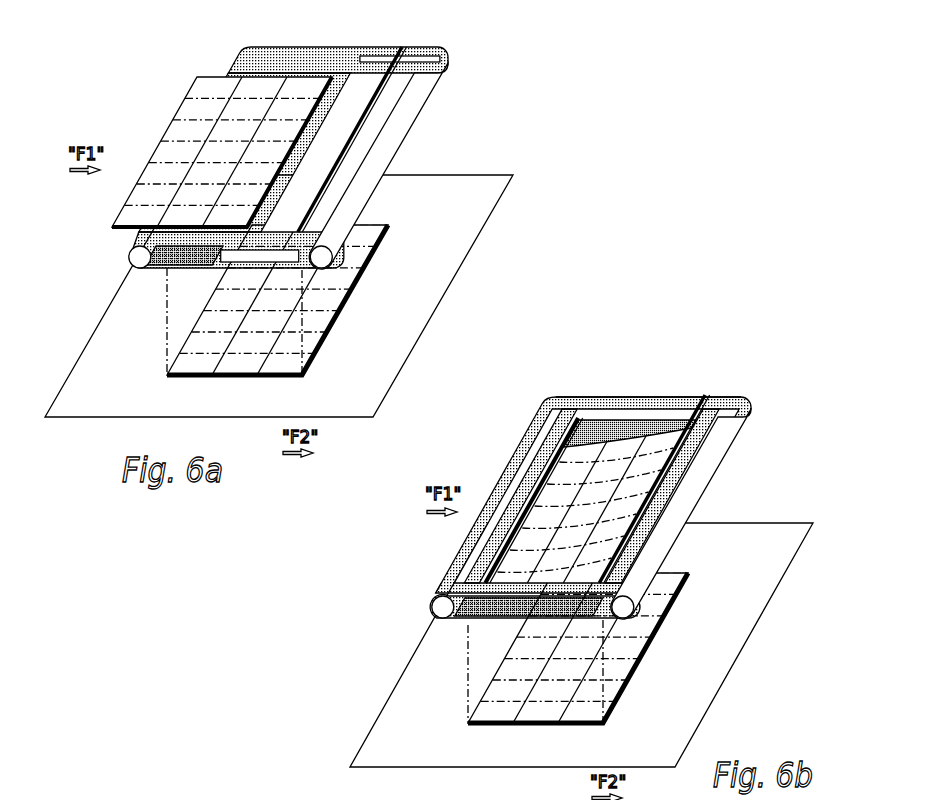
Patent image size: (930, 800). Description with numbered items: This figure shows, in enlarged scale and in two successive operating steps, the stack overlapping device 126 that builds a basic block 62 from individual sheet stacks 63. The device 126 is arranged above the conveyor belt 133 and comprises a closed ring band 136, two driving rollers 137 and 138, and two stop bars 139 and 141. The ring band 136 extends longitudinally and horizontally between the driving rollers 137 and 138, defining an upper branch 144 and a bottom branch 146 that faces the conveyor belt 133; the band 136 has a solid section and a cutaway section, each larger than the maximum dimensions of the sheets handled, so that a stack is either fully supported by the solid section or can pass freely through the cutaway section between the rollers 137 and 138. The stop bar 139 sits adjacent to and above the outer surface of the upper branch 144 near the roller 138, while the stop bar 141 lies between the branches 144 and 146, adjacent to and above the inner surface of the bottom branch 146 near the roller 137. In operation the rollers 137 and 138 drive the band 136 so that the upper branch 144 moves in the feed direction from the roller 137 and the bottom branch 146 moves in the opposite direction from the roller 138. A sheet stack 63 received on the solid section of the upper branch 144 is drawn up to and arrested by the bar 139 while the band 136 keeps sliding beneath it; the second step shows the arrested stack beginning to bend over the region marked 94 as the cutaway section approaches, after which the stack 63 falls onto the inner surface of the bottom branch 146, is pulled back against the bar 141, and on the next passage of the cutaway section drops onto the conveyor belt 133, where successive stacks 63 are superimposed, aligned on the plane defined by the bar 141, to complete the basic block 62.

In FIG. 6A, the basic block 62 is at (328, 345).
In FIG. 6B, the basic block 62 is at (637, 677).
In FIG. 6A, the sheet stack 63 is at (200, 88).
In FIG. 6B, the sheet stack 63 is at (545, 452).
In FIG. 6B, the rolled portion of panel 94 is at (636, 412).
In FIG. 6A, the stack overlapping device 126 is at (315, 144).
In FIG. 6B, the stack overlapping device 126 is at (613, 510).
In FIG. 6A, the conveyor belt 133 is at (70, 418).
In FIG. 6B, the conveyor belt 133 is at (392, 760).
In FIG. 6A, the closed ring band 136 is at (277, 47).
In FIG. 6B, the closed ring band 136 is at (582, 397).
In FIG. 6A, the driving roller 137 is at (134, 257).
In FIG. 6B, the driving roller 137 is at (437, 607).
In FIG. 6A, the driving roller 138 is at (440, 78).
In FIG. 6B, the driving roller 138 is at (733, 425).
In FIG. 6A, the stop bar 139 is at (405, 47).
In FIG. 6B, the stop bar 139 is at (705, 396).
In FIG. 6A, the stop bar 141 is at (174, 280).
In FIG. 6B, the stop bar 141 is at (476, 628).
In FIG. 6B, the upper branch 144 is at (622, 393).
In FIG. 6B, the bottom branch 146 is at (448, 628).